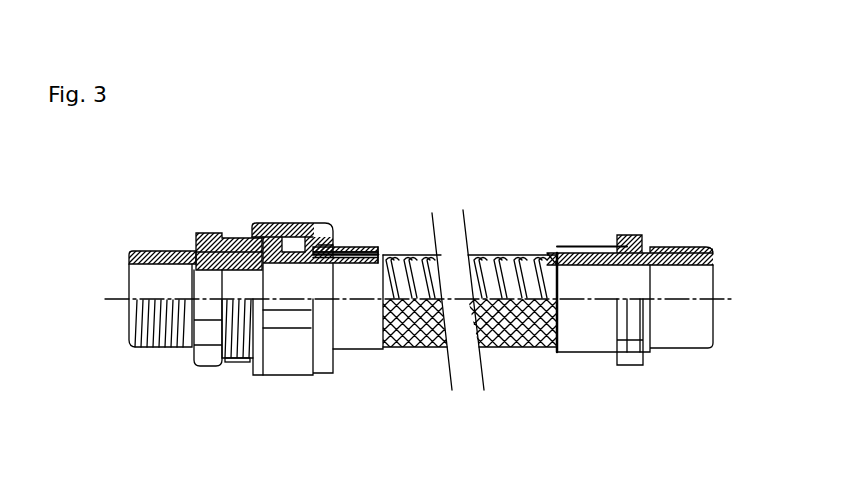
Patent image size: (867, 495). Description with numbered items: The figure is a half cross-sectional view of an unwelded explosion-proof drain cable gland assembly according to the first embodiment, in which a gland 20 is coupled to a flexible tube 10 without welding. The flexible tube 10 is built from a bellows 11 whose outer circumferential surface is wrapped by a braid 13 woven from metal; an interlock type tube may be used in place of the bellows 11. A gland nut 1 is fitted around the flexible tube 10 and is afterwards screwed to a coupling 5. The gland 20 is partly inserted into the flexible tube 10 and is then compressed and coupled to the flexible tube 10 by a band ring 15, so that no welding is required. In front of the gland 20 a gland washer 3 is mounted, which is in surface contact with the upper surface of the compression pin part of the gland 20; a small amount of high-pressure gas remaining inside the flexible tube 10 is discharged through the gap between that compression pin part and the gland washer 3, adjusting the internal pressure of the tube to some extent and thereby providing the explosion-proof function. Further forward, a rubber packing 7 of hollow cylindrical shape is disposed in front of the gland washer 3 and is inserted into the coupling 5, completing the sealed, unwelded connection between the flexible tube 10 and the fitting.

The gland nut 1 is at (303, 232).
The gland washer 3 is at (263, 283).
The coupling 5 is at (157, 250).
The rubber packing 7 is at (212, 237).
The flexible tube 10 is at (469, 297).
The bellows 11 is at (400, 257).
The braid 13 is at (413, 255).
The band ring 15 is at (358, 257).
The gland 20 is at (283, 257).